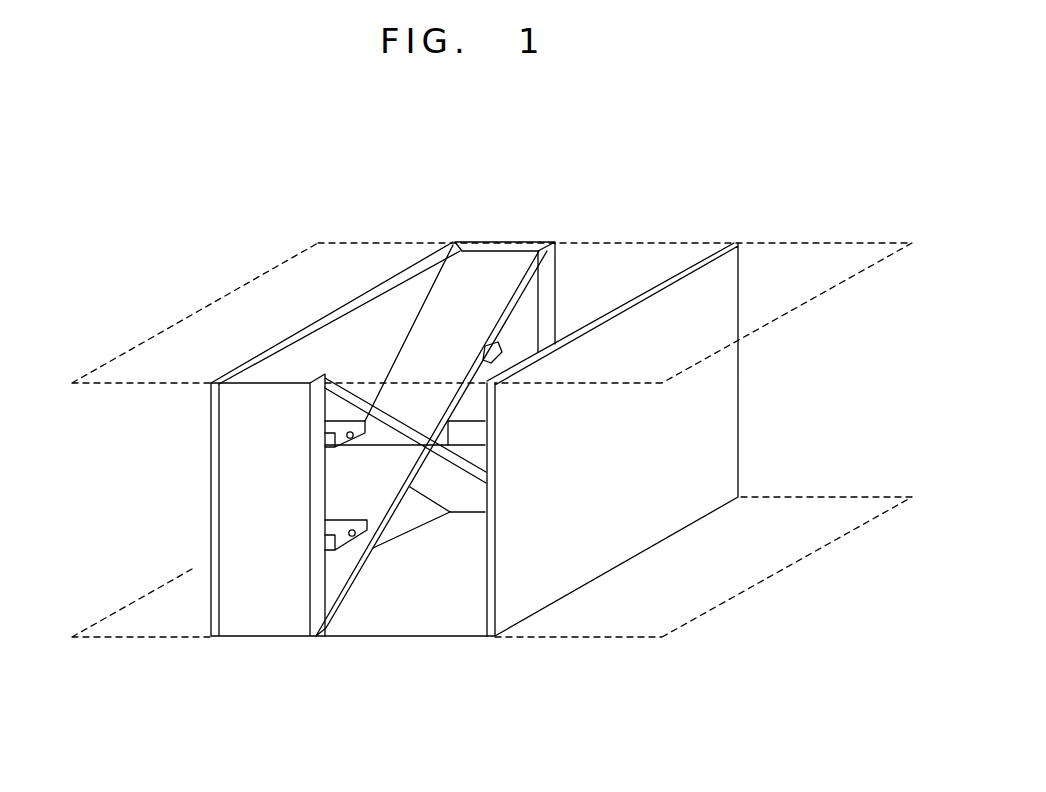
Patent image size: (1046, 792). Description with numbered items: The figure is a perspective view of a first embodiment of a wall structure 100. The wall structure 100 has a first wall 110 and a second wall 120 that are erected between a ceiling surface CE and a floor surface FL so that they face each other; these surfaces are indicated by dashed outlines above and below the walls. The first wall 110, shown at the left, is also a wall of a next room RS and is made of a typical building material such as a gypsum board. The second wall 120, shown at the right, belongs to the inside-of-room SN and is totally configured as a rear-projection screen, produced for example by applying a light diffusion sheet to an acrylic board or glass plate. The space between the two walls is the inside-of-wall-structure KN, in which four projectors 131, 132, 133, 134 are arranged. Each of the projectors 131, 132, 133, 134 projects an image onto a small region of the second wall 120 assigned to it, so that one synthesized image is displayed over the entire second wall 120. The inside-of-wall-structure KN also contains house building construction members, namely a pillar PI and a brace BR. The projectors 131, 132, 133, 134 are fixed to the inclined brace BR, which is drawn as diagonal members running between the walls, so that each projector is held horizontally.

The wall structure 100 is at (515, 176).
The first wall 110 is at (212, 537).
The second wall 120 is at (530, 572).
The projector 131 is at (310, 325).
The projector 132 is at (336, 563).
The projector 133 is at (500, 350).
The projector 134 is at (470, 455).
The pillar PI is at (484, 250).
The brace BR is at (363, 400).
The next room RS is at (152, 469).
The inside-of-room SN is at (780, 403).
The ceiling surface CE is at (790, 243).
The floor surface FL is at (597, 637).
The inside-of-wall-structure KN is at (626, 266).